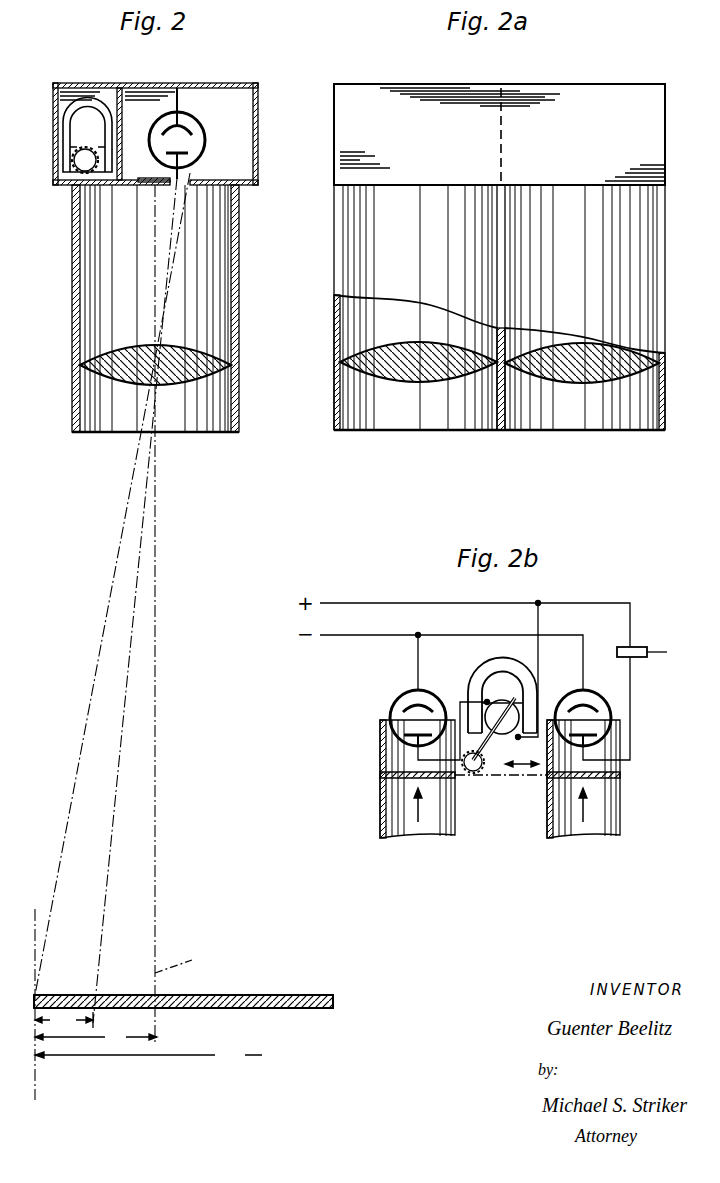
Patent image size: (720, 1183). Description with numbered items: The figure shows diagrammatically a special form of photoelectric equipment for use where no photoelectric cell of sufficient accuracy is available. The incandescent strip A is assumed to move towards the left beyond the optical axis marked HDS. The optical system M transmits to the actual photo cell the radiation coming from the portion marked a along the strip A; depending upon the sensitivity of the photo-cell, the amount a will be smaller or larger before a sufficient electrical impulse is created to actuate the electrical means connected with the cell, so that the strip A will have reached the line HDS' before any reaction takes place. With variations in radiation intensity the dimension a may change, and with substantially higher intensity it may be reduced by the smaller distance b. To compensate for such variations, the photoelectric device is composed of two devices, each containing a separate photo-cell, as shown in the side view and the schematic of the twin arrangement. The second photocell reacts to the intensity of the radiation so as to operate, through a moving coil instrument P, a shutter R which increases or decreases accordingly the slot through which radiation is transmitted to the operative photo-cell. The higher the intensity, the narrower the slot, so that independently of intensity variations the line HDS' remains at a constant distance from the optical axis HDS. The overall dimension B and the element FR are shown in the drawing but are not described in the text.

In FIG. 2, the optical system M is at (78, 371).
In FIG. 2, the moving coil instrument P is at (99, 108).
In FIG. 2B, the moving coil instrument P is at (470, 689).
In FIG. 2, the shutter R is at (168, 183).
In FIG. 2B, the shutter R is at (542, 779).
In FIG. 2, the strip A is at (308, 995).
In FIG. 2, the optical axis HDS is at (192, 962).
In FIG. 2, the line HDS' is at (75, 1022).
In FIG. 2, the portion a is at (96, 1038).
In FIG. 2, the distance b is at (64, 1021).
In FIG. 2, the width B is at (148, 1056).
In FIG. 2B, the relay FR is at (638, 648).